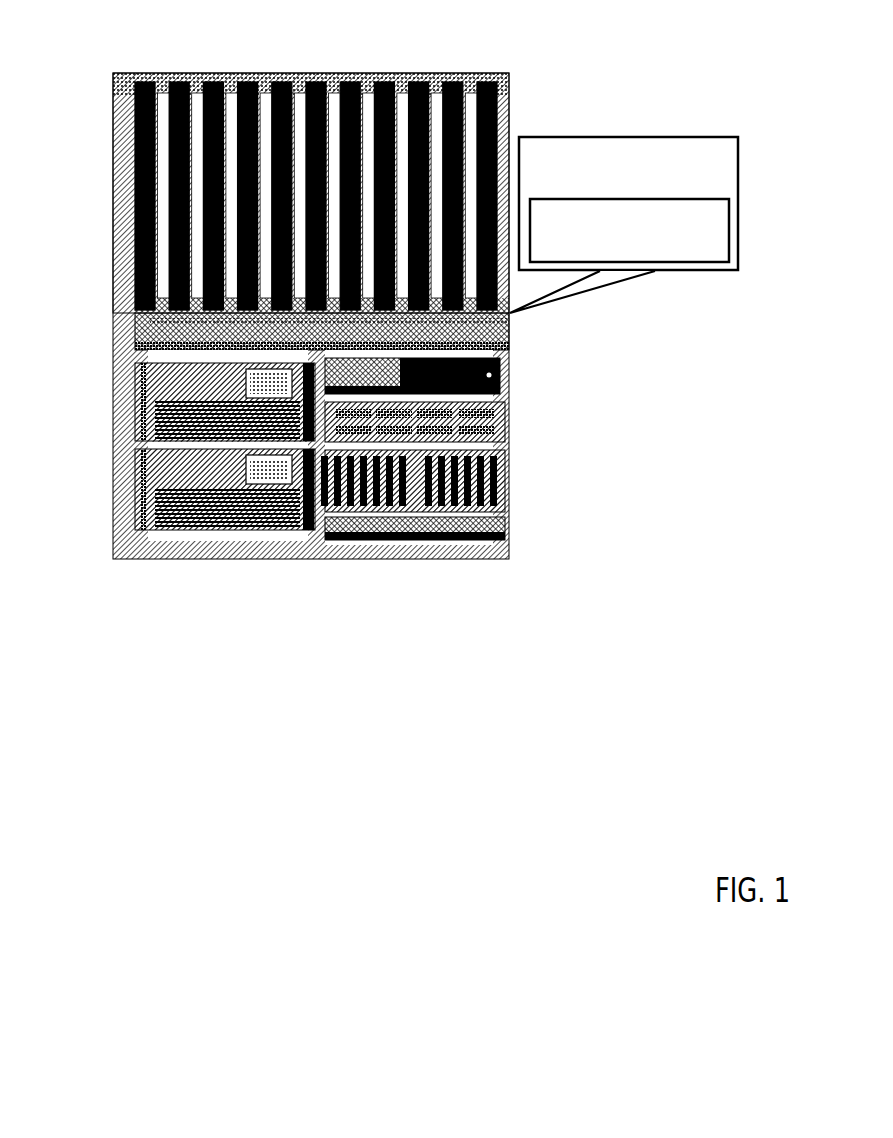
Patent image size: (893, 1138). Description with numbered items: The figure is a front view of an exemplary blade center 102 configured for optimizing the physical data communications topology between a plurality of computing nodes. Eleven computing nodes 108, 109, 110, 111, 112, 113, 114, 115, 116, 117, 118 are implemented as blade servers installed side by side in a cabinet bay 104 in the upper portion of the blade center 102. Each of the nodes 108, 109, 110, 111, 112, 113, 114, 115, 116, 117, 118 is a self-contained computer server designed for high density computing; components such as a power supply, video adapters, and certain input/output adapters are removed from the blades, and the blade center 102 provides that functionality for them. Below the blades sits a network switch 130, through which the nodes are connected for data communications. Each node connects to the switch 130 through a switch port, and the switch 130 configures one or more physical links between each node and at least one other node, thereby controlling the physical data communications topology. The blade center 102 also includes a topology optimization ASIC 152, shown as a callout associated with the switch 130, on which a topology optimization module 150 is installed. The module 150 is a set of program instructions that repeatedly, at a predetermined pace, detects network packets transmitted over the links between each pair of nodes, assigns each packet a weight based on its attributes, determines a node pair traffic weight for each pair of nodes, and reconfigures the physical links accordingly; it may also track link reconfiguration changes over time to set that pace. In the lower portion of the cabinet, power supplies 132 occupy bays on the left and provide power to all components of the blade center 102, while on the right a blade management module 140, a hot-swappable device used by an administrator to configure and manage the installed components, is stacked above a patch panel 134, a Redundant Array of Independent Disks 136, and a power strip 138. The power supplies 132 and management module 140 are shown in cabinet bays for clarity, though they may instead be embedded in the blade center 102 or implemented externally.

The blade center 102 is at (141, 600).
The cabinet bay 104 is at (118, 113).
The computing node 108 is at (147, 81).
The computing node 109 is at (181, 81).
The computing node 110 is at (215, 81).
The computing node 111 is at (249, 81).
The computing node 112 is at (283, 81).
The computing node 113 is at (317, 81).
The computing node 114 is at (351, 81).
The computing node 115 is at (385, 81).
The computing node 116 is at (419, 81).
The computing node 117 is at (453, 81).
The computing node 118 is at (488, 81).
The network switch 130 is at (651, 342).
The power supplies 132 is at (111, 456).
The patch panel 134 is at (705, 437).
The Redundant Array of Independent Disks (RAID) 136 is at (698, 497).
The power strip 138 is at (700, 542).
The blade management module 140 is at (514, 373).
The topology optimization module 150 is at (680, 256).
The topology optimization ASIC 152 is at (668, 194).